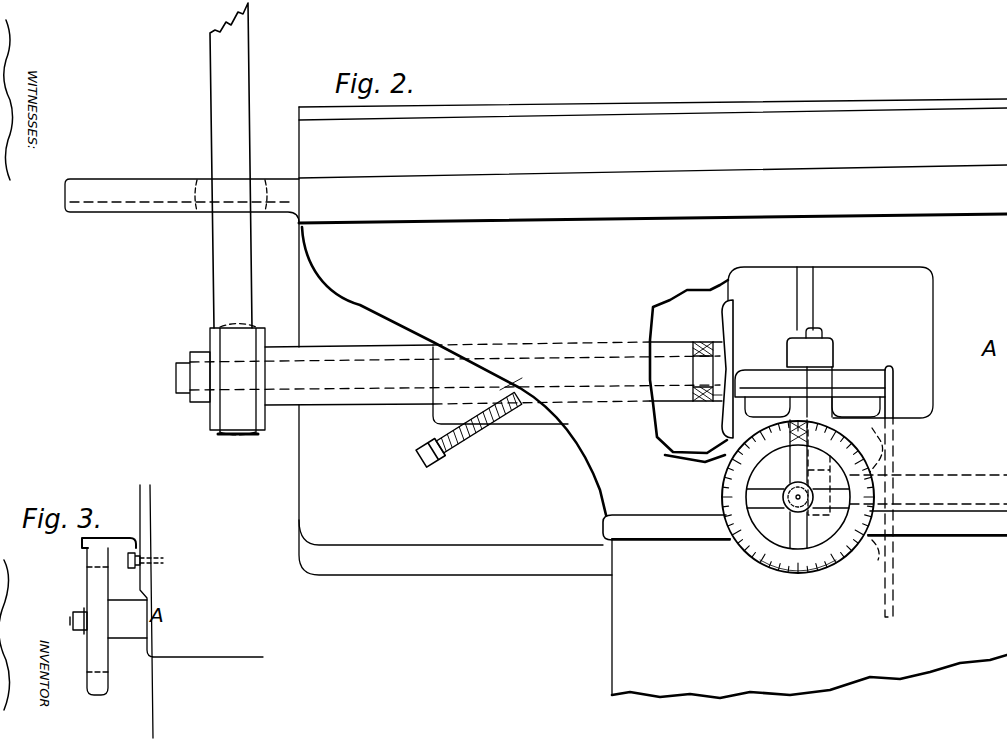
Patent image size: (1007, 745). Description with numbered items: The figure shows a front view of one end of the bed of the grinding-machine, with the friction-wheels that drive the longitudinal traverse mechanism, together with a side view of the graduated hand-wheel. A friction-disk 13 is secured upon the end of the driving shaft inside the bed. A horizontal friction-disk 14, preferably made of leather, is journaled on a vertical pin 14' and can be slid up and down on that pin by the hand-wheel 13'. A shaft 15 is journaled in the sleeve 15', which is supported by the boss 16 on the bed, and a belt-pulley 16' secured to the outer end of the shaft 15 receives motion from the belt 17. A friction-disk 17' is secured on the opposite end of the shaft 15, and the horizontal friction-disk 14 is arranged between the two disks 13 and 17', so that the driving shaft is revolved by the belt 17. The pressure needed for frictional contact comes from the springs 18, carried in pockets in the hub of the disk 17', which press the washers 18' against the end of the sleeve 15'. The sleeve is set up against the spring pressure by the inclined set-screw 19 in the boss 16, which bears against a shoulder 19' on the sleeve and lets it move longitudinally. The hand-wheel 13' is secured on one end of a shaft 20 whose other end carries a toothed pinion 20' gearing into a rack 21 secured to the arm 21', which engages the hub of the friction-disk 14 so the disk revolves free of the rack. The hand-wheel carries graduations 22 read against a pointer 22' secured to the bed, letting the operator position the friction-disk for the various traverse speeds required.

In FIG. 2, the friction-disk 13 is at (897, 491).
In FIG. 2, the hand-wheel 13' is at (797, 497).
In FIG. 3, the hand-wheel 13' is at (104, 618).
In FIG. 2, the horizontal friction-disk 14 is at (818, 379).
In FIG. 2, the vertical pin 14' is at (820, 298).
In FIG. 2, the shaft 15 is at (431, 373).
In FIG. 2, the sleeve 15' is at (539, 385).
In FIG. 2, the boss 16 is at (500, 399).
In FIG. 2, the belt-pulley 16' is at (220, 380).
In FIG. 2, the belt 17 is at (231, 165).
In FIG. 2, the friction-disk 17' is at (744, 369).
In FIG. 2, the springs 18 is at (699, 357).
In FIG. 2, the washers 18' is at (700, 415).
In FIG. 2, the inclined set-screw 19 is at (461, 428).
In FIG. 2, the shoulder 19' is at (542, 381).
In FIG. 2, the shaft 20 is at (784, 484).
In FIG. 2, the toothed pinion 20' is at (798, 507).
In FIG. 2, the rack 21 is at (827, 472).
In FIG. 2, the arm 21' is at (829, 372).
In FIG. 2, the graduations 22 is at (798, 578).
In FIG. 3, the pointer 22' is at (133, 542).